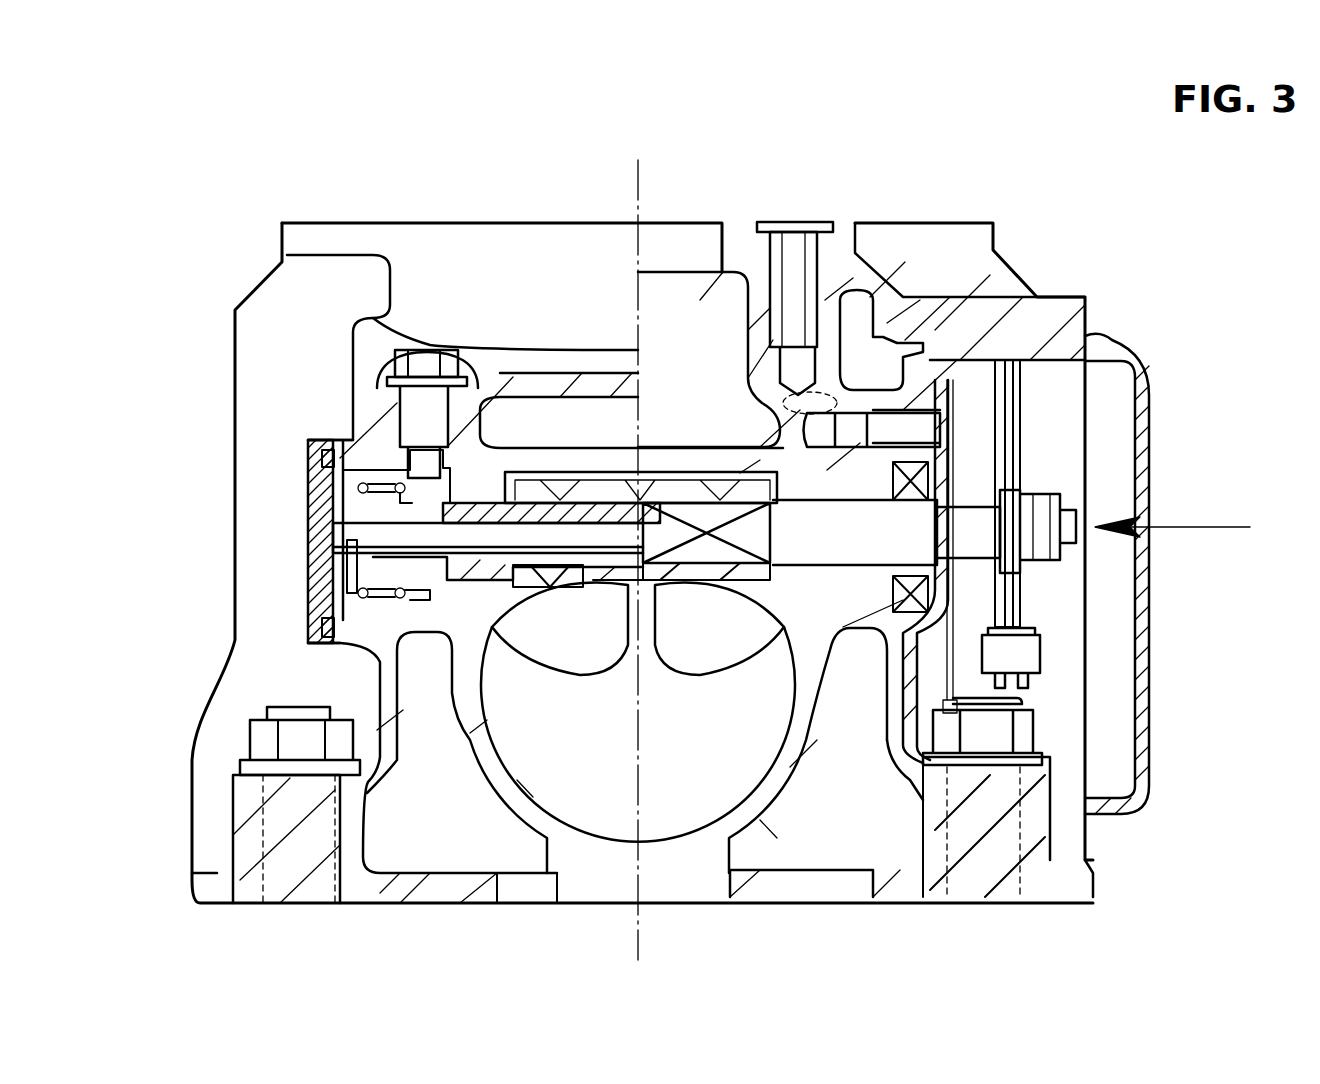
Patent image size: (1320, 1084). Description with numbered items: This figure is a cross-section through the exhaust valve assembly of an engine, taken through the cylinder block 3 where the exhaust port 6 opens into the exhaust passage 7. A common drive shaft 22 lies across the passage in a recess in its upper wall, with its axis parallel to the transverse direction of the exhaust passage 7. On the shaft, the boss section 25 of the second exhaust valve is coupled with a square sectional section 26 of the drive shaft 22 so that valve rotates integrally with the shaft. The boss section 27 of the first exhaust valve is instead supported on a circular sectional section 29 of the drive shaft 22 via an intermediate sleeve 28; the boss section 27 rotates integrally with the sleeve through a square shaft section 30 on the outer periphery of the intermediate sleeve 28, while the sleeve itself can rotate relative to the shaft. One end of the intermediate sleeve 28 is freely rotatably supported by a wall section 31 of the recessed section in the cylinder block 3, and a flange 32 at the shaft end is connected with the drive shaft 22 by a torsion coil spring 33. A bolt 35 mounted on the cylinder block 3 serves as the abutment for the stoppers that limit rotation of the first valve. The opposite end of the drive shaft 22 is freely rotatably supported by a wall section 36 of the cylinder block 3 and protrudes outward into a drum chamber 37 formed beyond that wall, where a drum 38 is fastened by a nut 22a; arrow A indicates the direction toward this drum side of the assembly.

The cylinder block 3 is at (642, 563).
The exhaust port 6 is at (600, 670).
The exhaust passage 7 is at (617, 820).
The drive shaft 22 is at (858, 541).
The nut 22a is at (1050, 490).
The boss section 25 is at (742, 487).
The square sectional section 26 is at (700, 550).
The boss section 27 is at (553, 490).
The intermediate sleeve 28 is at (467, 510).
The circular sectional section 29 is at (598, 540).
The square shaft section 30 is at (545, 585).
The wall section 31 is at (470, 717).
The flange 32 is at (430, 620).
The torsion coil spring 33 is at (380, 610).
The bolt 35 is at (425, 400).
The wall section 36 is at (867, 645).
The drum chamber 37 is at (1072, 700).
The drum 38 is at (1033, 603).
The direction arrow A is at (1192, 528).